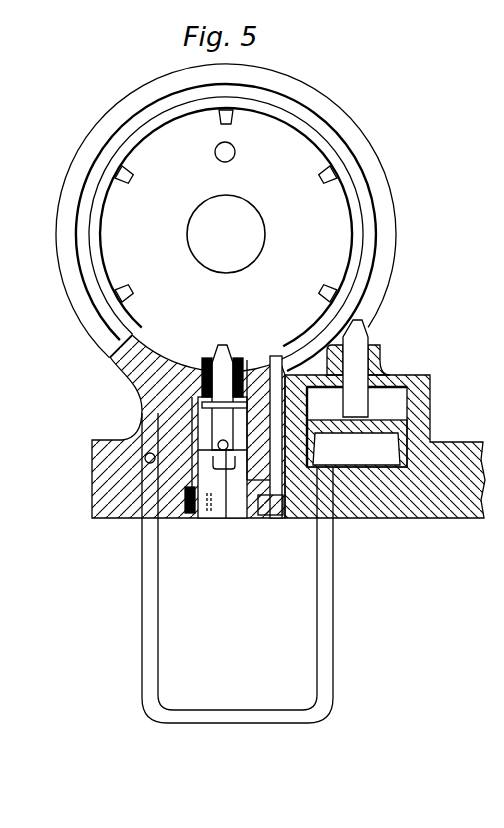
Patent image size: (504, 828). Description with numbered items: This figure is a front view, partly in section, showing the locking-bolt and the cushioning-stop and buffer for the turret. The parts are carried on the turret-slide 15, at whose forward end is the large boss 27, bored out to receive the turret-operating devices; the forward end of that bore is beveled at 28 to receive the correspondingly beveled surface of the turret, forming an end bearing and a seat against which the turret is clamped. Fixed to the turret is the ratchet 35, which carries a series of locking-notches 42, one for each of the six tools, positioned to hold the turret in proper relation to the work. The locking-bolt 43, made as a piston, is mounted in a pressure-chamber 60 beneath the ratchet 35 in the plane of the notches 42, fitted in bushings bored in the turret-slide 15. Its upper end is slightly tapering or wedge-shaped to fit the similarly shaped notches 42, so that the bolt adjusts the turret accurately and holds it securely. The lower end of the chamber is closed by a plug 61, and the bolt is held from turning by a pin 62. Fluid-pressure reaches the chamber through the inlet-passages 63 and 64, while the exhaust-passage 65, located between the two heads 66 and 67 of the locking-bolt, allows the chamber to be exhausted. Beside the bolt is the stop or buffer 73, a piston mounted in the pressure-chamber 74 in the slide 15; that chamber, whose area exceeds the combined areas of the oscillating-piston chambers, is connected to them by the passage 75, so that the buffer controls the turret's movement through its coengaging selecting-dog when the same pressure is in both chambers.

The turret-slide 15 is at (92, 487).
The boss 27 is at (78, 306).
The beveled seat 28 is at (90, 182).
The ratchet 35 is at (123, 241).
The locking-notches 42 is at (332, 176).
The locking-bolt 43 is at (224, 360).
The pressure-chamber 60 is at (207, 432).
The plug 61 is at (239, 518).
The pin 62 is at (208, 518).
The inlet-passage 63 is at (274, 372).
The inlet-passage 64 is at (277, 518).
The exhaust-passage 65 is at (218, 445).
The head of locking-bolt 66 is at (208, 417).
The head of locking-bolt 67 is at (226, 518).
The buffer 73 is at (363, 341).
The pressure-chamber 74 is at (393, 407).
The passage 75 is at (240, 716).